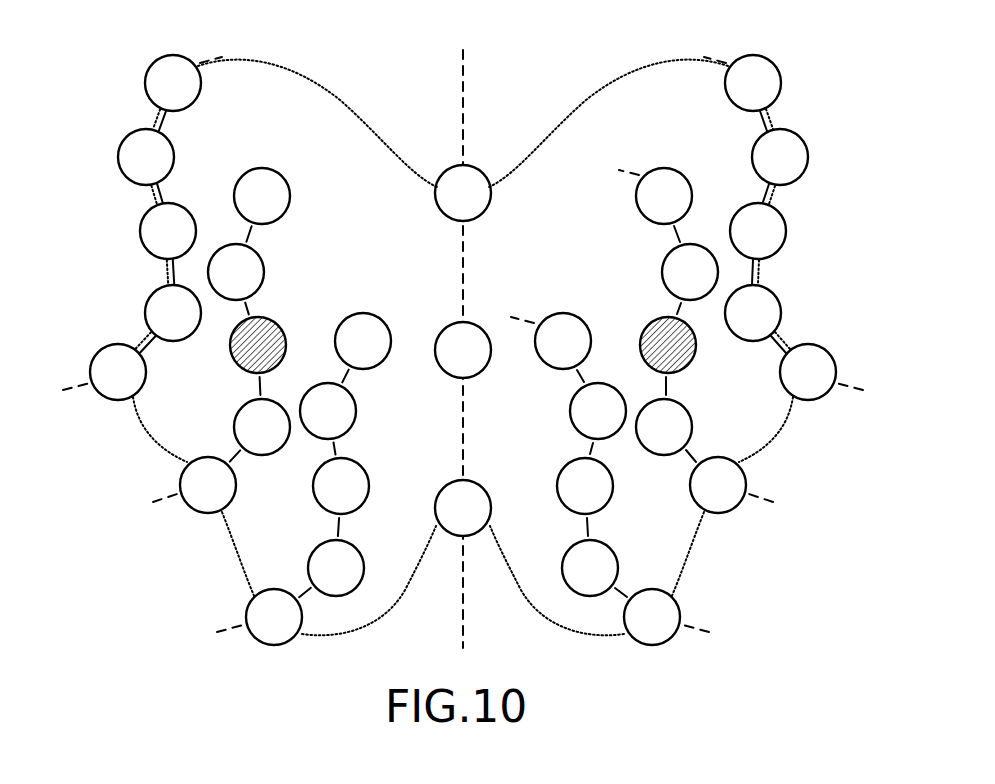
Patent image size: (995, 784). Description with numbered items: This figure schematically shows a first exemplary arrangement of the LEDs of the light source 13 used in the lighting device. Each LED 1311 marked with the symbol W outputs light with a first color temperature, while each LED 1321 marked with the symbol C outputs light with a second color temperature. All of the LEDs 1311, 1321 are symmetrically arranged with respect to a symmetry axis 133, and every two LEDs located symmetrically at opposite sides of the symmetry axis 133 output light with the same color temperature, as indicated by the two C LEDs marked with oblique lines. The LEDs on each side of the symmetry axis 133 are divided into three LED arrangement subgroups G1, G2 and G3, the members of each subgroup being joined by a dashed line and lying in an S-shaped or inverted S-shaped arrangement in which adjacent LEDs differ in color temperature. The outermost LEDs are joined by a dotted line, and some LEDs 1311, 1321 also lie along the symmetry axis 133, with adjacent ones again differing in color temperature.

The organic compound molecular structure 13 is at (783, 27).
The symmetry axis 133 is at (466, 80).
The LED 1311 is at (167, 58).
The LED 1321 is at (133, 138).
The LED arrangement subgroup G1 is at (214, 58).
The LED arrangement subgroup G2 is at (302, 168).
The LED arrangement subgroup G3 is at (408, 318).